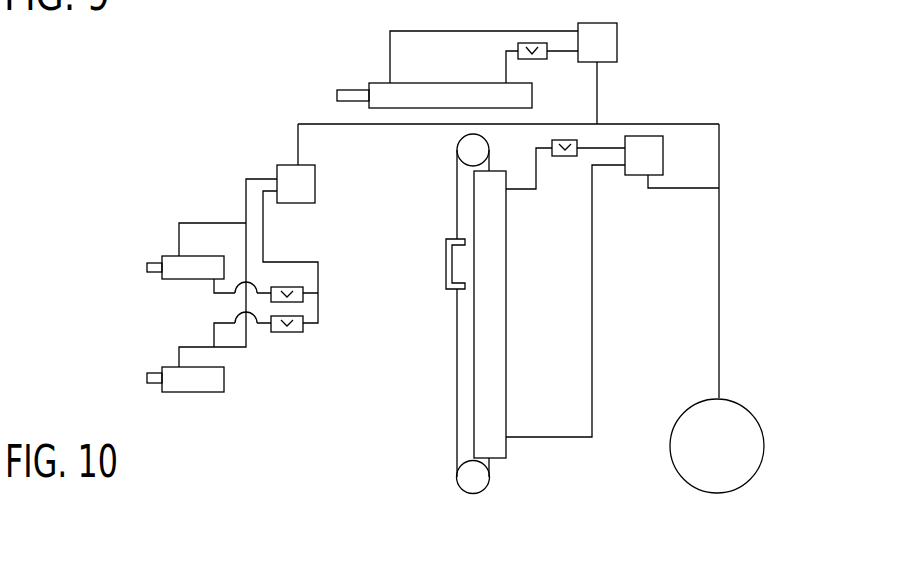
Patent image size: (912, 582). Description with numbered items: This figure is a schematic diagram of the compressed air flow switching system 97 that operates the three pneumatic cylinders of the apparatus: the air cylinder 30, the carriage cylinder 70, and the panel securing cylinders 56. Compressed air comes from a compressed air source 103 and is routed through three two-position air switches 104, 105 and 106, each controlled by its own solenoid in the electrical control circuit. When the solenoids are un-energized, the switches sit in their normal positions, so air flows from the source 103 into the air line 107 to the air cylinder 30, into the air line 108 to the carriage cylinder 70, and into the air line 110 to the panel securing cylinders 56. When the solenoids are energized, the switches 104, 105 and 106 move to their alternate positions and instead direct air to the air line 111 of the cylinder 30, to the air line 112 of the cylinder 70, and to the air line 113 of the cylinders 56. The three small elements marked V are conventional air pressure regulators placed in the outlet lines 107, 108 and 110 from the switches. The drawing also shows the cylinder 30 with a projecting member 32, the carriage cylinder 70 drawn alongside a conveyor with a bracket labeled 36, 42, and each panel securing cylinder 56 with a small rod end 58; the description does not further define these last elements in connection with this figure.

The air cylinder 30 is at (434, 95).
The slide member 32 is at (367, 88).
The conveyor guide 36 is at (414, 241).
The clamp 42 is at (447, 254).
The panel securing cylinders 56 is at (197, 269).
The actuator rod 58 is at (145, 267).
The carriage cylinder 70 is at (497, 385).
The compressed air flow switching system 97 is at (742, 90).
The compressed air source 103 is at (737, 406).
The two-position air switch 104 is at (607, 47).
The two-position air switch 105 is at (655, 154).
The two-position air switch 106 is at (295, 178).
The air line 107 is at (551, 51).
The air line 108 is at (538, 172).
The air line 110 is at (318, 274).
The air line 111 is at (390, 55).
The air line 112 is at (592, 323).
The air line 113 is at (246, 194).